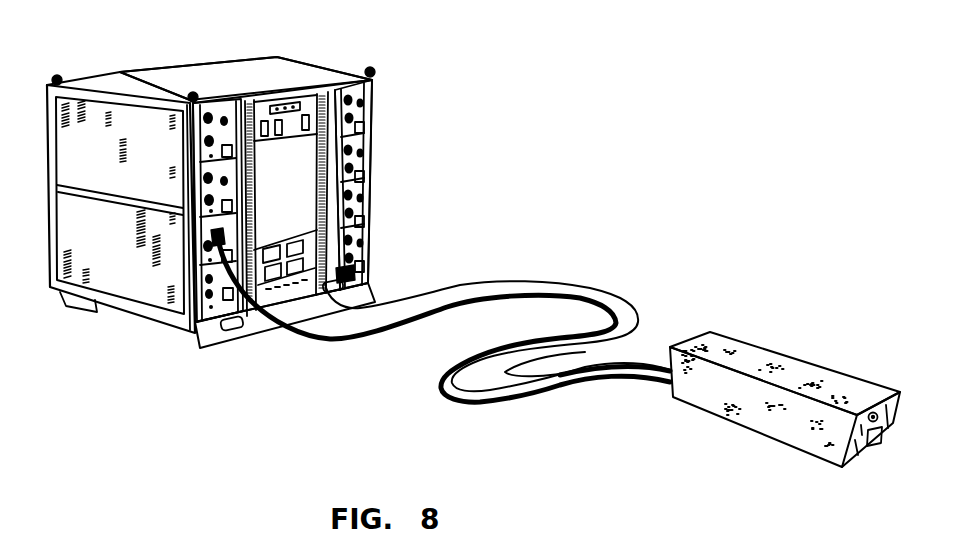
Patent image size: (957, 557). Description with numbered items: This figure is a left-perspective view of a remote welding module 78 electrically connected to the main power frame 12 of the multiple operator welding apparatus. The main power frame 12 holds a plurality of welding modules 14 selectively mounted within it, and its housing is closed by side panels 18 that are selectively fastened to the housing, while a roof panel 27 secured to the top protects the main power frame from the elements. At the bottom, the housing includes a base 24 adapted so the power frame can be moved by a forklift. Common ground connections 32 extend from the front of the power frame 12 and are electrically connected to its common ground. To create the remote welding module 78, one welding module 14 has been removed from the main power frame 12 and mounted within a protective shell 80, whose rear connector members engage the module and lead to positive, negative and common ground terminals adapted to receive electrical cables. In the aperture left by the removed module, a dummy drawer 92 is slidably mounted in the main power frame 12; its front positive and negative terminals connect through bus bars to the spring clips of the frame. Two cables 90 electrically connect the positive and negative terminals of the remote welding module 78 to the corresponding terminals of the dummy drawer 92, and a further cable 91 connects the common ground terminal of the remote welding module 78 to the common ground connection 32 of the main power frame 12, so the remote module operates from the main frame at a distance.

The main power frame 12 is at (406, 148).
The welding module 14 is at (370, 104).
The side panel 18 is at (96, 123).
The base 24 is at (210, 340).
The roof panel 27 is at (293, 77).
The common ground connection 32 is at (348, 272).
The remote welding module 78 is at (857, 352).
The protective shell 80 is at (735, 408).
The cable 90 is at (510, 304).
The cable 91 is at (588, 292).
The dummy drawer 92 is at (217, 234).